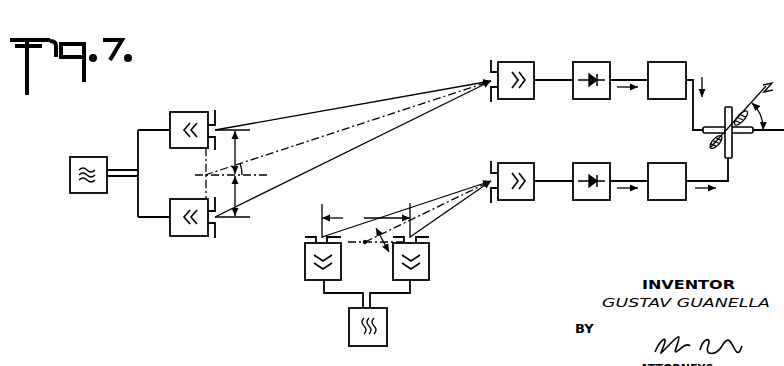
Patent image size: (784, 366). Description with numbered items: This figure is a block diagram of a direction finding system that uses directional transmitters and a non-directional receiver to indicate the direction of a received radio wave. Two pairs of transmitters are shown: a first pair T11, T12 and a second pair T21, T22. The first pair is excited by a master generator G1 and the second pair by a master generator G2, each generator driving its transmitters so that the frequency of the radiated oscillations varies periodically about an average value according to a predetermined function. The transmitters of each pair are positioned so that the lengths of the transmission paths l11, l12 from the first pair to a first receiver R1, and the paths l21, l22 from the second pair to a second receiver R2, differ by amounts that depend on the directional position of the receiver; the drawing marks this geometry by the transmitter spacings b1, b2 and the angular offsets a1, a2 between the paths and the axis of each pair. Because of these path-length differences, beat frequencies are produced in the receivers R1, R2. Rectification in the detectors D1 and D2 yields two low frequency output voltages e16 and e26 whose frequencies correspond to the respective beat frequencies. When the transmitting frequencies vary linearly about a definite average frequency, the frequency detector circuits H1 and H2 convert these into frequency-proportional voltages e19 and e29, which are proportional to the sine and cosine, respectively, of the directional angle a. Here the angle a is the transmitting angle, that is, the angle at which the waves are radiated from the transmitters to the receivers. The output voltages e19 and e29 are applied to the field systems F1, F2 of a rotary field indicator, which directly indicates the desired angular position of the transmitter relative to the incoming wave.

The master generator G2 is at (88, 157).
The transmitter T21 is at (193, 109).
The transmitter T22 is at (188, 236).
The angle / spacing a2 is at (245, 154).
The spacing b2 is at (235, 196).
The beam path l21 is at (353, 105).
The beam path l22 is at (353, 149).
The second receiver R2 is at (517, 62).
The rectifier D2 is at (591, 62).
The frequency detector circuit H2 is at (668, 62).
The low frequency output voltage e26 is at (627, 98).
The frequency-proportional voltage e29 is at (714, 88).
The field system F1 is at (729, 108).
The field system F2 is at (735, 136).
The directional angle a is at (763, 116).
The first receiver R1 is at (524, 158).
The rectifier D1 is at (596, 158).
The frequency detector circuit H1 is at (673, 158).
The low frequency output voltage e16 is at (627, 198).
The frequency-proportional voltage e19 is at (705, 198).
The master generator G1 is at (387, 338).
The transmitter T12 is at (305, 268).
The transmitter T11 is at (429, 270).
The spacing b1 is at (366, 220).
The angle a1 is at (386, 240).
The beam path l12 is at (406, 209).
The beam path l11 is at (450, 209).